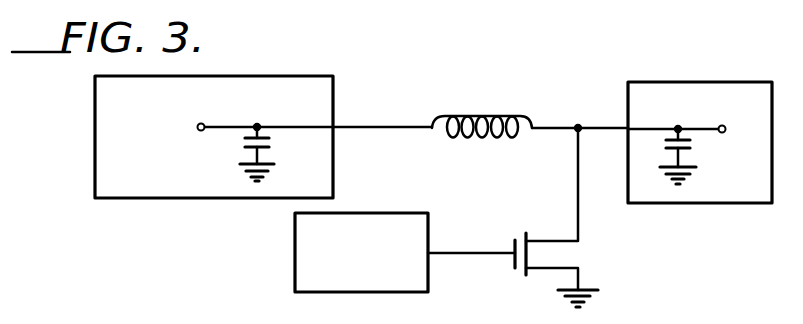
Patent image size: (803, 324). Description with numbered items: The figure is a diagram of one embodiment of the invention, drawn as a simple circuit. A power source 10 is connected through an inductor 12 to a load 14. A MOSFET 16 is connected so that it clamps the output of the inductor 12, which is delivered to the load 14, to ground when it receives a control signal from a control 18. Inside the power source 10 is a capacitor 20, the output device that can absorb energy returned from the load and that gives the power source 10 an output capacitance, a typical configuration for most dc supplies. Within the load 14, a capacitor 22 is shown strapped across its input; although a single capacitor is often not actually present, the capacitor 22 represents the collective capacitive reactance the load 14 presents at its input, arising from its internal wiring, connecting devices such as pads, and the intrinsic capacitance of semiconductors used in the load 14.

The power source 10 is at (267, 76).
The inductor 12 is at (483, 116).
The load 14 is at (695, 82).
The MOSFET 16 is at (518, 233).
The control 18 is at (390, 213).
The capacitor 20 is at (243, 140).
The capacitor 22 is at (692, 146).